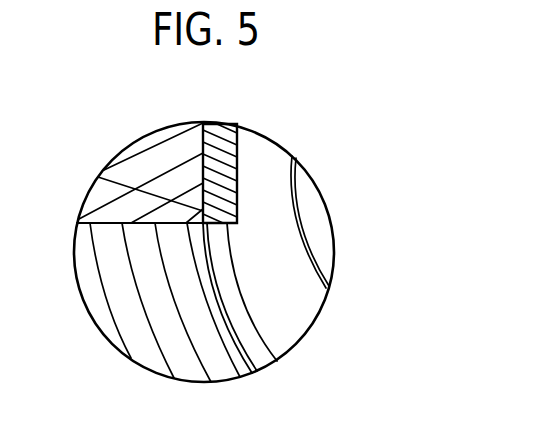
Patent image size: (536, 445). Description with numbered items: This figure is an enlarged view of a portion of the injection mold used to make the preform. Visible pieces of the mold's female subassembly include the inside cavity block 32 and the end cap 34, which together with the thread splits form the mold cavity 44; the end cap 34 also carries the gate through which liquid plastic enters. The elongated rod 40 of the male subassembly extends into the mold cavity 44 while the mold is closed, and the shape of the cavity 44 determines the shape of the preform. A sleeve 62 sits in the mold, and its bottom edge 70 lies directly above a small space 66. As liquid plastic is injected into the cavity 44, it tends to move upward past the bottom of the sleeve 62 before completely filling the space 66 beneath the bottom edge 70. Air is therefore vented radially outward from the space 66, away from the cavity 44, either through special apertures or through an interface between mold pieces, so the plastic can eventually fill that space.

The inside cavity block 32 is at (98, 195).
The end cap 34 is at (132, 320).
The elongated rod 40 is at (314, 216).
The cavity 44 is at (300, 350).
The sleeve 62 is at (220, 130).
The space 66 is at (215, 228).
The bottom edge 70 is at (108, 166).